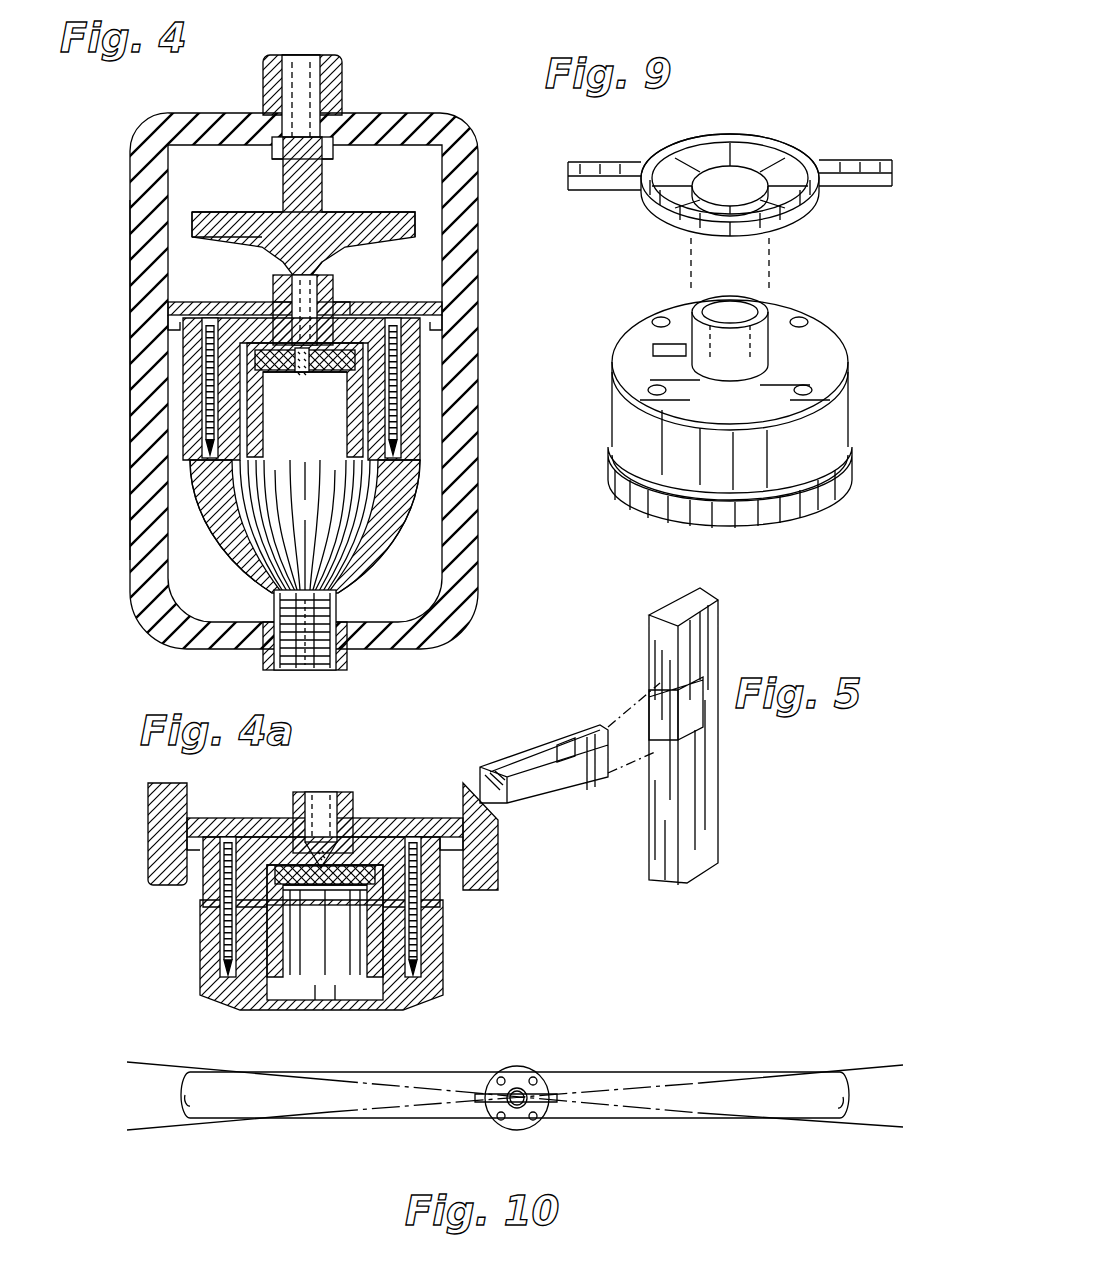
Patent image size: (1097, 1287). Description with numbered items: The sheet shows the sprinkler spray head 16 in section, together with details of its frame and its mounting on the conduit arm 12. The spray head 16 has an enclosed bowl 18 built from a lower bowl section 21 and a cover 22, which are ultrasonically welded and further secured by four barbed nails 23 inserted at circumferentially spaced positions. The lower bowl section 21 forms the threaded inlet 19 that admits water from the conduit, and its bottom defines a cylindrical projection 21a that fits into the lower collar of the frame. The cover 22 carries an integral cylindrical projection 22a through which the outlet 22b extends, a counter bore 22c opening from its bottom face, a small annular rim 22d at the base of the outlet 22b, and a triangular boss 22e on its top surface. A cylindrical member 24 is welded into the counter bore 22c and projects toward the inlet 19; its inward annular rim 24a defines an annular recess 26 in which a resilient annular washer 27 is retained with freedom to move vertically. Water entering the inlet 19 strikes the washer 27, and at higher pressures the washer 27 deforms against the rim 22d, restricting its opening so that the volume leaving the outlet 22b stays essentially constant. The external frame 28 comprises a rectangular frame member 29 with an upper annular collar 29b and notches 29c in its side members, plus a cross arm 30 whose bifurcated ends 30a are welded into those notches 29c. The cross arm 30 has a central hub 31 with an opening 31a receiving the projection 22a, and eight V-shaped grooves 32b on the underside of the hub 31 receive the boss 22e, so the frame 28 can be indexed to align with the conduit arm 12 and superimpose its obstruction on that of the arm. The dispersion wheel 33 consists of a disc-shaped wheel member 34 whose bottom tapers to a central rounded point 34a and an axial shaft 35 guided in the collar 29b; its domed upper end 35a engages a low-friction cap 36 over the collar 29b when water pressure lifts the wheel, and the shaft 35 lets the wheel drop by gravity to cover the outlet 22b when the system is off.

In FIG. 10, the conduit arm 12 is at (622, 1068).
In FIG. 4, the spray head 16 is at (445, 92).
In FIG. 10, the spray head 16 is at (520, 1068).
In FIG. 4, the enclosed bowl 18 is at (428, 519).
In FIG. 4A, the enclosed bowl 18 is at (445, 977).
In FIG. 10, the enclosed bowl 18 is at (497, 1127).
In FIG. 4, the threaded inlet 19 is at (320, 672).
In FIG. 4, the lower bowl section 21 is at (382, 566).
In FIG. 4, the cylindrical projection 21a is at (280, 672).
In FIG. 4, the cover 22 is at (428, 356).
In FIG. 9, the cover 22 is at (852, 362).
In FIG. 4, the cylindrical projection 22a is at (283, 280).
In FIG. 9, the cylindrical projection 22a is at (762, 310).
In FIG. 4A, the cylindrical projection 22a is at (344, 795).
In FIG. 4, the outlet 22b is at (288, 282).
In FIG. 4A, the outlet 22b is at (322, 793).
In FIG. 4, the counter bore 22c is at (305, 387).
In FIG. 4, the annular rim 22d is at (275, 302).
In FIG. 9, the boss 22e is at (652, 349).
In FIG. 4A, the boss 22e is at (280, 832).
In FIG. 4, the barbed nails 23 is at (400, 418).
In FIG. 9, the barbed nails 23 is at (808, 322).
In FIG. 4A, the barbed nails 23 is at (228, 836).
In FIG. 4, the cylindrical member 24 is at (305, 526).
In FIG. 4, the annular rim 24a is at (305, 400).
In FIG. 4A, the annular rim 24a is at (325, 932).
In FIG. 4, the annular recess 26 is at (347, 303).
In FIG. 4, the resilient annular washer 27 is at (305, 382).
In FIG. 4A, the resilient annular washer 27 is at (346, 888).
In FIG. 4, the external frame 28 is at (128, 170).
In FIG. 4A, the external frame 28 is at (146, 810).
In FIG. 10, the external frame 28 is at (540, 1105).
In FIG. 4, the rectangular frame member 29 is at (478, 170).
In FIG. 5, the rectangular frame member 29 is at (718, 640).
In FIG. 4A, the rectangular frame member 29 is at (500, 870).
In FIG. 4, the annular collar 29b is at (325, 76).
In FIG. 4, the notch 29c is at (358, 650).
In FIG. 5, the notch 29c is at (692, 690).
In FIG. 5, the cross arm 30 is at (522, 750).
In FIG. 5, the bifurcated end 30a is at (572, 738).
In FIG. 4, the central hub 31 is at (398, 302).
In FIG. 9, the central hub 31 is at (770, 134).
In FIG. 4A, the central hub 31 is at (410, 818).
In FIG. 9, the opening 31a is at (730, 191).
In FIG. 9, the V-shaped grooves 32b is at (700, 150).
In FIG. 4, the dispersion wheel 33 is at (236, 210).
In FIG. 4A, the dispersion wheel 33 is at (416, 835).
In FIG. 4, the wheel member 34 is at (360, 213).
In FIG. 4, the central rounded point 34a is at (327, 280).
In FIG. 4, the axial shaft 35 is at (322, 168).
In FIG. 4, the domed upper end 35a is at (277, 164).
In FIG. 4, the cap 36 is at (305, 55).